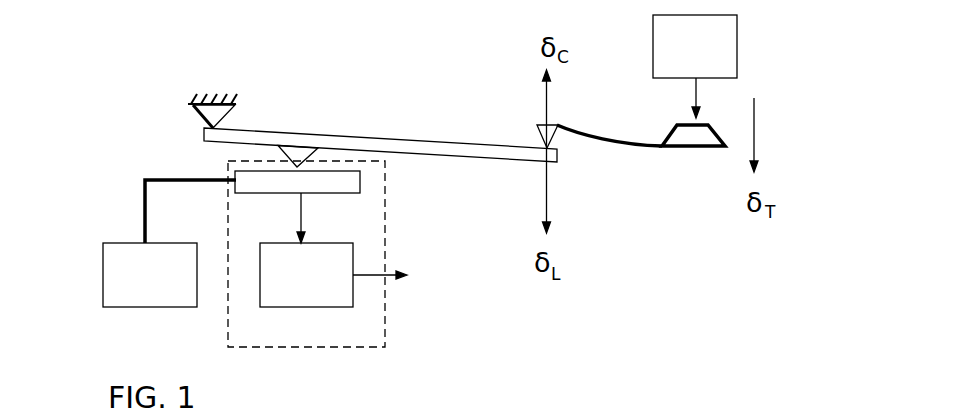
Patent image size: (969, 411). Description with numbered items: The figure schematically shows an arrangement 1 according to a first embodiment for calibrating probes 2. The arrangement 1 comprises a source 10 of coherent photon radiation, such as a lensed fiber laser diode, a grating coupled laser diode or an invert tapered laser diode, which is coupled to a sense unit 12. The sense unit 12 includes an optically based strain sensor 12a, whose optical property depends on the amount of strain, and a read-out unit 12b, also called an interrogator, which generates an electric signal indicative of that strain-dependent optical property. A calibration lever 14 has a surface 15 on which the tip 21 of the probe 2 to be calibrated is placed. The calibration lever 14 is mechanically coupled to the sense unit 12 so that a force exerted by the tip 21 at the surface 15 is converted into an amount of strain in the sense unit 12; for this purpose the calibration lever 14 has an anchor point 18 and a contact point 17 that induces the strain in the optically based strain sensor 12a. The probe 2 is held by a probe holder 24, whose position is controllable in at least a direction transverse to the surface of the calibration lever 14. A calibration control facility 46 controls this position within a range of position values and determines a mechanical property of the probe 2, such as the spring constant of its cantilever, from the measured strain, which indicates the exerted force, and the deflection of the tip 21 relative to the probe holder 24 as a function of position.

The arrangement 1 is at (454, 317).
The probe 2 is at (687, 193).
The source of coherent photon radiation 10 is at (169, 243).
The sense unit 12 is at (333, 277).
The optically based strain sensor 12a is at (343, 182).
The read-out unit 12b is at (333, 275).
The calibration lever 14 is at (377, 135).
The surface 15 is at (515, 128).
The contact point 17 is at (284, 153).
The anchor point 18 is at (192, 103).
The tip 21 is at (552, 135).
The probe holder 24 is at (678, 126).
The calibration control facility 46 is at (695, 66).